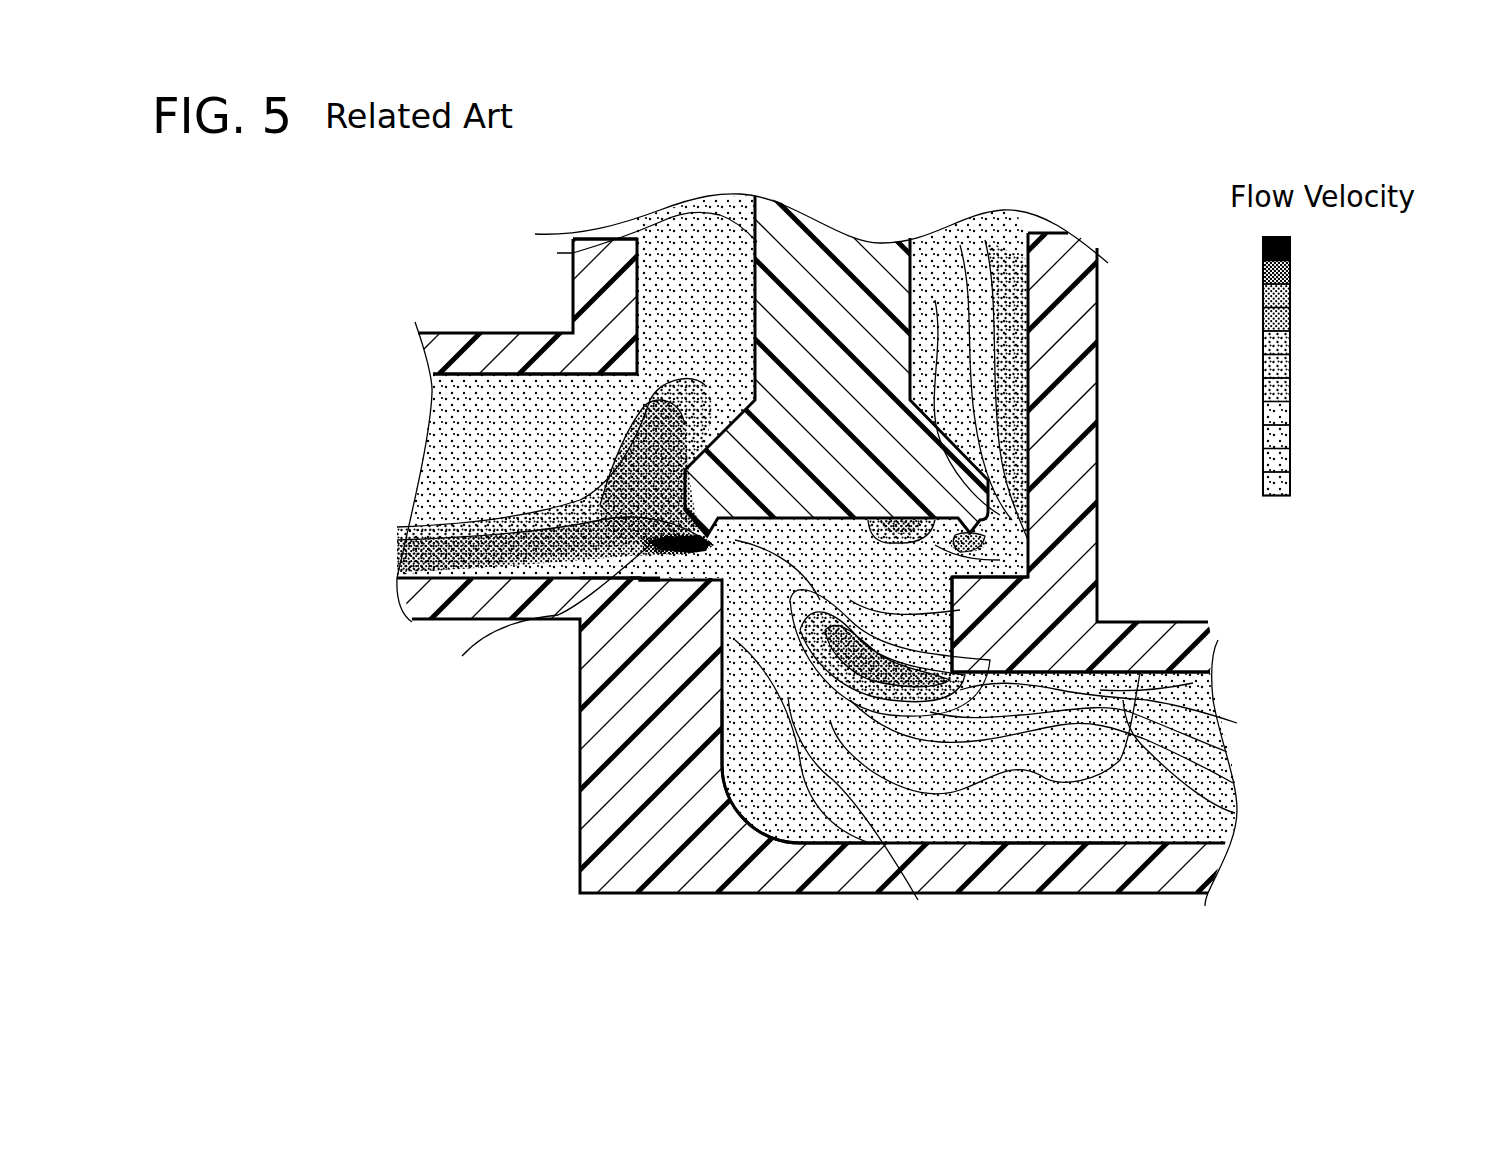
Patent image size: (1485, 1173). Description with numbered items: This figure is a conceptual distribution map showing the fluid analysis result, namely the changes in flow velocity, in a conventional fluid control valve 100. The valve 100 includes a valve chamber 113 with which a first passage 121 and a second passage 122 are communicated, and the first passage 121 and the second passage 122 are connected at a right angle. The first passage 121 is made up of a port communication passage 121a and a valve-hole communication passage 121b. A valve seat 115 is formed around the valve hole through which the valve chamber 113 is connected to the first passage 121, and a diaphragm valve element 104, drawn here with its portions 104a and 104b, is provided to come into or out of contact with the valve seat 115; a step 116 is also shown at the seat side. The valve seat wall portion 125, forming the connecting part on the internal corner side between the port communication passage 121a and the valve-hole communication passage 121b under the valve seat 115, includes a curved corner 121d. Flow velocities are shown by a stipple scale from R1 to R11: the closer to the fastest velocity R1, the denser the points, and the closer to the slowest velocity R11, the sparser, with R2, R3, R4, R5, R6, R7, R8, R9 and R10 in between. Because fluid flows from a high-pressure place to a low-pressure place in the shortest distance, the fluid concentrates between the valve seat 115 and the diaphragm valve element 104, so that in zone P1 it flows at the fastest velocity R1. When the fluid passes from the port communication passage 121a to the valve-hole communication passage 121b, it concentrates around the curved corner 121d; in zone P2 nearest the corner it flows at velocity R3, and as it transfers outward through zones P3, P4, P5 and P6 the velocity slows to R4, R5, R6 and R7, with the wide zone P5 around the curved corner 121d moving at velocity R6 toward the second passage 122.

The fluid control valve 100 is at (517, 179).
The diaphragm valve element 104 is at (477, 212).
The first body portion 104a is at (793, 228).
The second body portion 104b is at (625, 420).
The valve chamber 113 is at (947, 430).
The valve seat 115 is at (957, 668).
The step portion 116 is at (642, 580).
The first passage 121 is at (1090, 942).
The port communication passage 121a is at (1058, 753).
The valve-hole communication passage 121b is at (905, 880).
The curved corner 121d is at (1047, 670).
The second passage 122 is at (448, 452).
The valve seat wall portion 125 is at (980, 668).
The zone P1 is at (523, 615).
The zone P2 is at (1235, 813).
The zone P3 is at (1233, 783).
The zone P4 is at (1227, 752).
The zone P5 is at (1237, 723).
The zone P6 is at (1193, 683).
The flow velocity R1 is at (1291, 249).
The flow velocity R2 is at (1291, 272).
The flow velocity R3 is at (1291, 296).
The flow velocity R4 is at (1291, 320).
The flow velocity R5 is at (1291, 343).
The flow velocity R6 is at (1291, 366).
The flow velocity R7 is at (1291, 390).
The flow velocity R8 is at (1291, 414).
The flow velocity R9 is at (1291, 437).
The flow velocity R10 is at (1291, 460).
The flow velocity R11 is at (1291, 484).